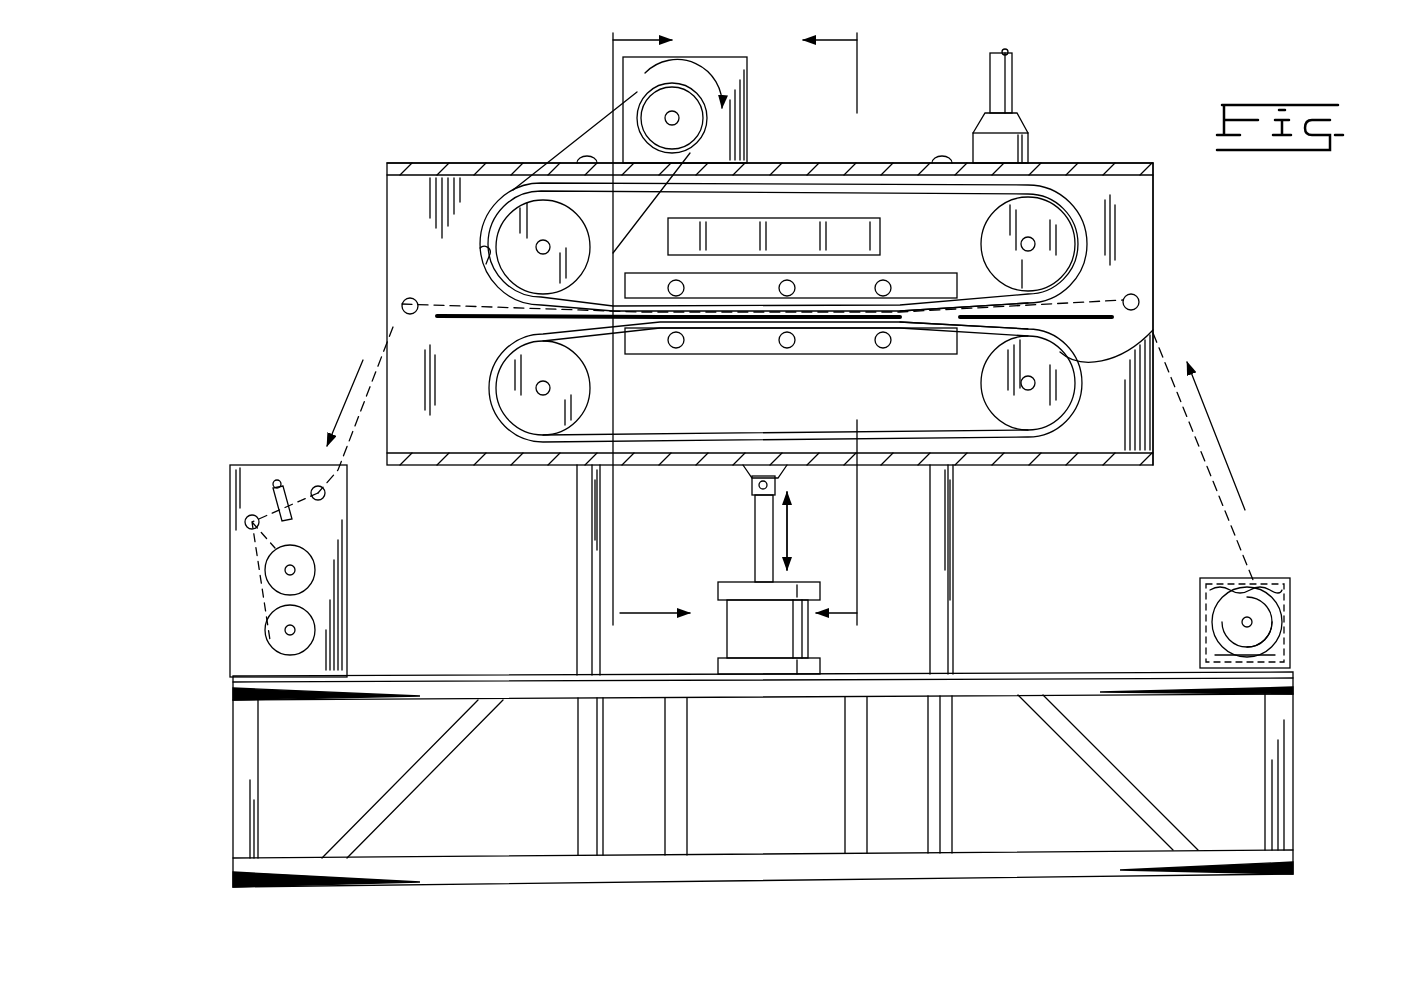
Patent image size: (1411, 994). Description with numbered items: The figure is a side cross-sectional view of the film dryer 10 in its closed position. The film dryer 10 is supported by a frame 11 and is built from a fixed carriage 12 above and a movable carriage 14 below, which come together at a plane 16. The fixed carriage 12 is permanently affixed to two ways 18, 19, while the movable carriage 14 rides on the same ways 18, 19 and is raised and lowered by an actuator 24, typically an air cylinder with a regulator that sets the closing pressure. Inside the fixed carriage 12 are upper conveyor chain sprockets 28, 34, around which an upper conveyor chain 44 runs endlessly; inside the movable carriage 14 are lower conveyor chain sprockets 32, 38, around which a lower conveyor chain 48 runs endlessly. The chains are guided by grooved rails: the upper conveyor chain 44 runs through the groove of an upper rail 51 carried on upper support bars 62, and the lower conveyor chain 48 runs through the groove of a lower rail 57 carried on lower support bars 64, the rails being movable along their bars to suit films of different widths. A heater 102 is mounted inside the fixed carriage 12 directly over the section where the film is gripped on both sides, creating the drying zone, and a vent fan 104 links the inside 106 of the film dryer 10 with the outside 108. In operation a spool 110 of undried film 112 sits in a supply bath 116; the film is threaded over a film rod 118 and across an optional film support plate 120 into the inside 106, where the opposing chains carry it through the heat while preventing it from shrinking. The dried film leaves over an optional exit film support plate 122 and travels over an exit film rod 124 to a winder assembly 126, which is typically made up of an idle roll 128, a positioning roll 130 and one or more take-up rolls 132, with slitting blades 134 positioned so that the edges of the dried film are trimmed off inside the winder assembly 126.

The film dryer 10 is at (1292, 305).
The frame 11 is at (1293, 770).
The fixed carriage 12 is at (1155, 230).
The movable carriage 14 is at (1158, 462).
The plane 16 is at (387, 312).
The way 18 is at (952, 566).
The way 19 is at (577, 507).
The actuator 24 is at (755, 527).
The upper conveyor chain sprocket 28 is at (996, 218).
The lower conveyor chain sprocket 32 is at (981, 388).
The upper conveyor chain sprocket 34 is at (497, 258).
The lower conveyor chain sprocket 38 is at (591, 384).
The upper conveyor chain 44 is at (603, 200).
The lower conveyor chain 48 is at (803, 430).
The upper rail 51 is at (940, 272).
The lower rail 57 is at (900, 357).
The upper support bars 62 is at (676, 280).
The lower support bars 64 is at (676, 348).
The heater 102 is at (790, 218).
The vent fan 104 is at (1028, 150).
The inside 106 is at (1127, 195).
The outside 108 is at (1005, 52).
The spool 110 is at (1232, 622).
The undried film 112 is at (1233, 522).
The supply bath 116 is at (1293, 585).
The film rod 118 is at (1140, 302).
The film support plate 120 is at (1153, 336).
The exit film support plate 122 is at (470, 320).
The exit film rod 124 is at (402, 305).
The winder assembly 126 is at (364, 568).
The idle roll 128 is at (330, 494).
The positioning roll 130 is at (245, 521).
The take-up rolls 132 is at (315, 560).
The slitting blades 134 is at (277, 485).